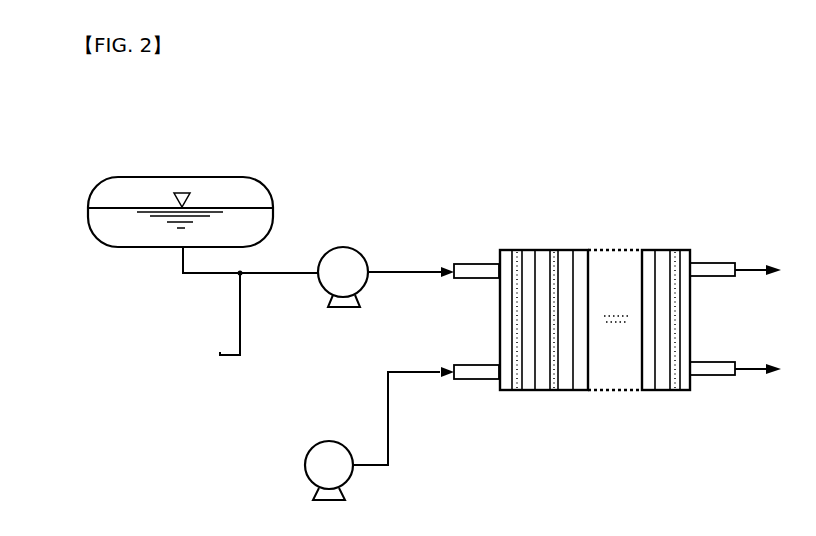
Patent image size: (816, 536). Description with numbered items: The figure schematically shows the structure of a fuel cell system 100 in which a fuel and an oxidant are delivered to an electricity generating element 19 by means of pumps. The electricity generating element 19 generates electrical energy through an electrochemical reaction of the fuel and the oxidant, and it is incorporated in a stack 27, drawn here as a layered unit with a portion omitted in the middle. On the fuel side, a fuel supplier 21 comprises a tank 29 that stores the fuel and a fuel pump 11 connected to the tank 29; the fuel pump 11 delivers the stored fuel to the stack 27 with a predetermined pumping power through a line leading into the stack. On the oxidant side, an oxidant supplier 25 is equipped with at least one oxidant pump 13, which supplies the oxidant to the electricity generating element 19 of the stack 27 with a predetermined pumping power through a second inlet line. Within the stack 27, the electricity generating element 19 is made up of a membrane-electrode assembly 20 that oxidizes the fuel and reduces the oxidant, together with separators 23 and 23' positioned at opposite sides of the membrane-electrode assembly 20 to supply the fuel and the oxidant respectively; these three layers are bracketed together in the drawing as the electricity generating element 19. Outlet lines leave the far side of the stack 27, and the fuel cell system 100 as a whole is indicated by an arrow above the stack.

The fuel cell system 100 is at (690, 98).
The fuel supplier 21 is at (70, 216).
The tank 29 is at (173, 177).
The fuel pump 11 is at (355, 249).
The oxidant pump 13 is at (336, 441).
The oxidant supplier 25 is at (303, 446).
The stack 27 is at (645, 238).
The separator 23 is at (533, 341).
The membrane-electrode assembly 20 is at (555, 391).
The separator 23' is at (584, 341).
The electricity generating element 19 is at (610, 432).